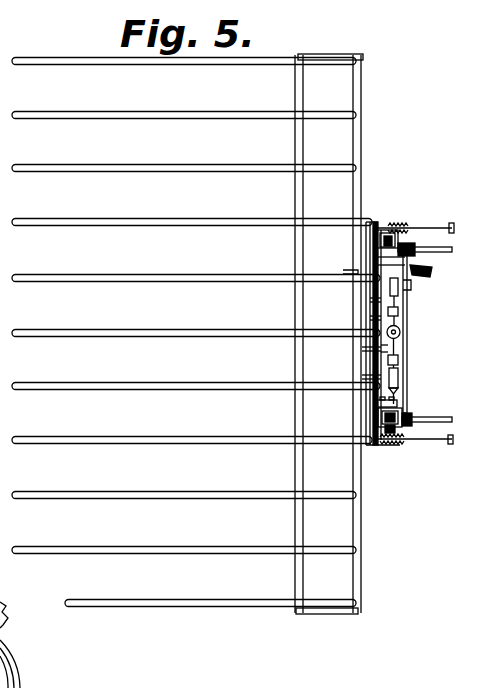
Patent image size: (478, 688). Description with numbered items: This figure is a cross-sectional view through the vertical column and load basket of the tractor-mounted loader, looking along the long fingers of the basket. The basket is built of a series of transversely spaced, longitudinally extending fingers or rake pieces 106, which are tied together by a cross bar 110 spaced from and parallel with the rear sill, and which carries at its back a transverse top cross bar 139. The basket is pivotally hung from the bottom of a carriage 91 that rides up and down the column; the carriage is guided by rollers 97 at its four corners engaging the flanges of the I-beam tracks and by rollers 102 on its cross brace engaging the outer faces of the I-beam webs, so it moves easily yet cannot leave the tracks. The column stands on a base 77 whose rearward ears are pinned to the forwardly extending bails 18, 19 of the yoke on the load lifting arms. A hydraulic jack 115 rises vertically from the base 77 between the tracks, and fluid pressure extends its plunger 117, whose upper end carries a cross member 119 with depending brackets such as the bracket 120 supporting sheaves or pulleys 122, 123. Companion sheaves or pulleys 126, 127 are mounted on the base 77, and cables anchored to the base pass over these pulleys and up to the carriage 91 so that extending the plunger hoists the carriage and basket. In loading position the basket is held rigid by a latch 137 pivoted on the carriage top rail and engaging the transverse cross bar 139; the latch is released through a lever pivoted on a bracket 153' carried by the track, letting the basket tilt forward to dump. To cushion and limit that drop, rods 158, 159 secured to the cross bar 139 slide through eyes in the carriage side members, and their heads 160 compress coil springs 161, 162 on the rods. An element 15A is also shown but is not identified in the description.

The fingers or rake pieces 106 is at (149, 173).
The cross bar 110 is at (294, 307).
The transverse cross bar 139 is at (362, 147).
The latch 137 is at (343, 270).
The coil spring 162 is at (388, 224).
The rod 159 is at (418, 226).
The heads 160 is at (454, 223).
The bail 19 is at (430, 251).
The wedge 15A is at (424, 273).
The bracket 153' is at (423, 295).
The sheave or pulley 123 is at (378, 300).
The cross member 119 is at (378, 318).
The sheave or pulley 127 is at (399, 313).
The hydraulic jack 115 is at (401, 331).
The plunger 117 is at (398, 337).
The sheave or pulley 122 is at (372, 349).
The carriage 91 is at (382, 350).
The depending bracket 120 is at (399, 360).
The sheave or pulley 126 is at (378, 377).
The base 77 is at (399, 387).
The rollers 97 is at (400, 407).
The bail 18 is at (450, 416).
The rollers 102 is at (396, 430).
The coil spring 161 is at (384, 446).
The rod 158 is at (420, 444).